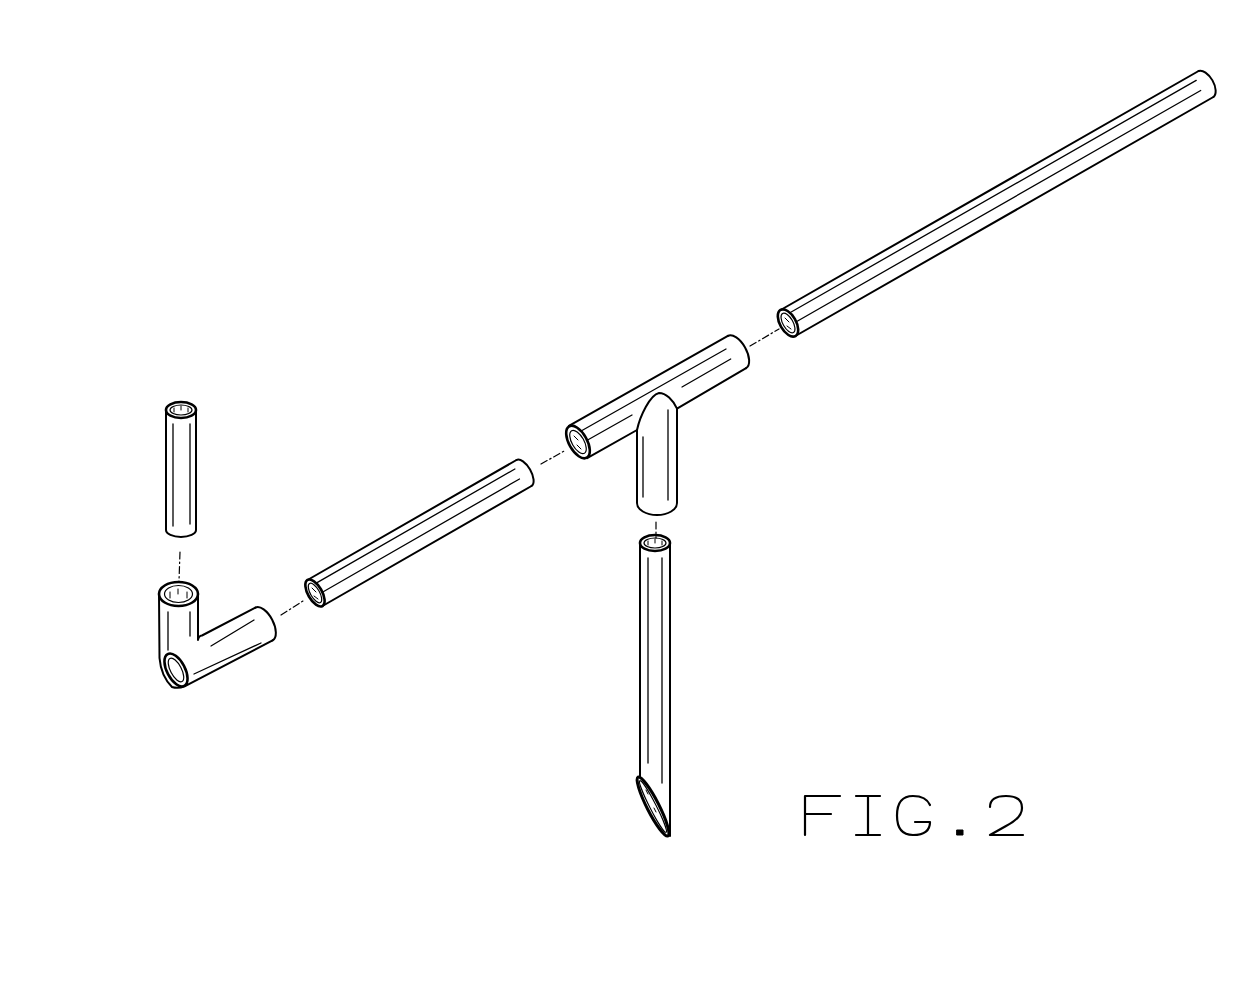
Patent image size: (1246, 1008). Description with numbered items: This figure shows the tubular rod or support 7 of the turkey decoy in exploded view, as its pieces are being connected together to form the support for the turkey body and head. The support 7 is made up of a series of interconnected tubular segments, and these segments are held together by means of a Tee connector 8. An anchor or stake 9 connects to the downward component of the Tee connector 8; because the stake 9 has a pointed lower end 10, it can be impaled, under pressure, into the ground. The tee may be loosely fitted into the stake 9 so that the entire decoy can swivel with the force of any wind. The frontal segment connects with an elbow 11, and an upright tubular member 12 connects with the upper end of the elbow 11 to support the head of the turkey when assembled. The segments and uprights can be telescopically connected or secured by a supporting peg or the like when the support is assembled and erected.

The support 7 is at (755, 268).
The Tee connector 8 is at (665, 448).
The stake 9 is at (655, 687).
The pointed lower end 10 is at (640, 797).
The elbow 11 is at (227, 658).
The upright tubular member 12 is at (193, 467).